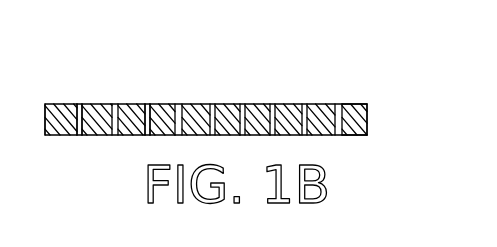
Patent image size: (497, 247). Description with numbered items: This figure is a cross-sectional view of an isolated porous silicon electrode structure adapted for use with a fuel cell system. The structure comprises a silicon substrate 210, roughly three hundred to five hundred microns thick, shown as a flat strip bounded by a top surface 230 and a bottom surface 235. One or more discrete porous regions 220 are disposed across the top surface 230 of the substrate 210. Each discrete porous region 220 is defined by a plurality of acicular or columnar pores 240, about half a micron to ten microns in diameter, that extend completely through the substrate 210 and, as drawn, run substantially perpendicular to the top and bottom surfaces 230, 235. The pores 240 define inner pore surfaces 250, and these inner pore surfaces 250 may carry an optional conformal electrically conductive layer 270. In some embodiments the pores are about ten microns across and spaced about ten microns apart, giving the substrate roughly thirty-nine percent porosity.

The silicon substrate 210 is at (368, 122).
The discrete porous region 220 is at (249, 108).
The top surface 230 is at (352, 103).
The bottom surface 235 is at (363, 135).
The acicular or columnar pores 240 is at (138, 103).
The inner pore surfaces 250 is at (80, 136).
The conformal electrically conductive layer 270 is at (147, 136).